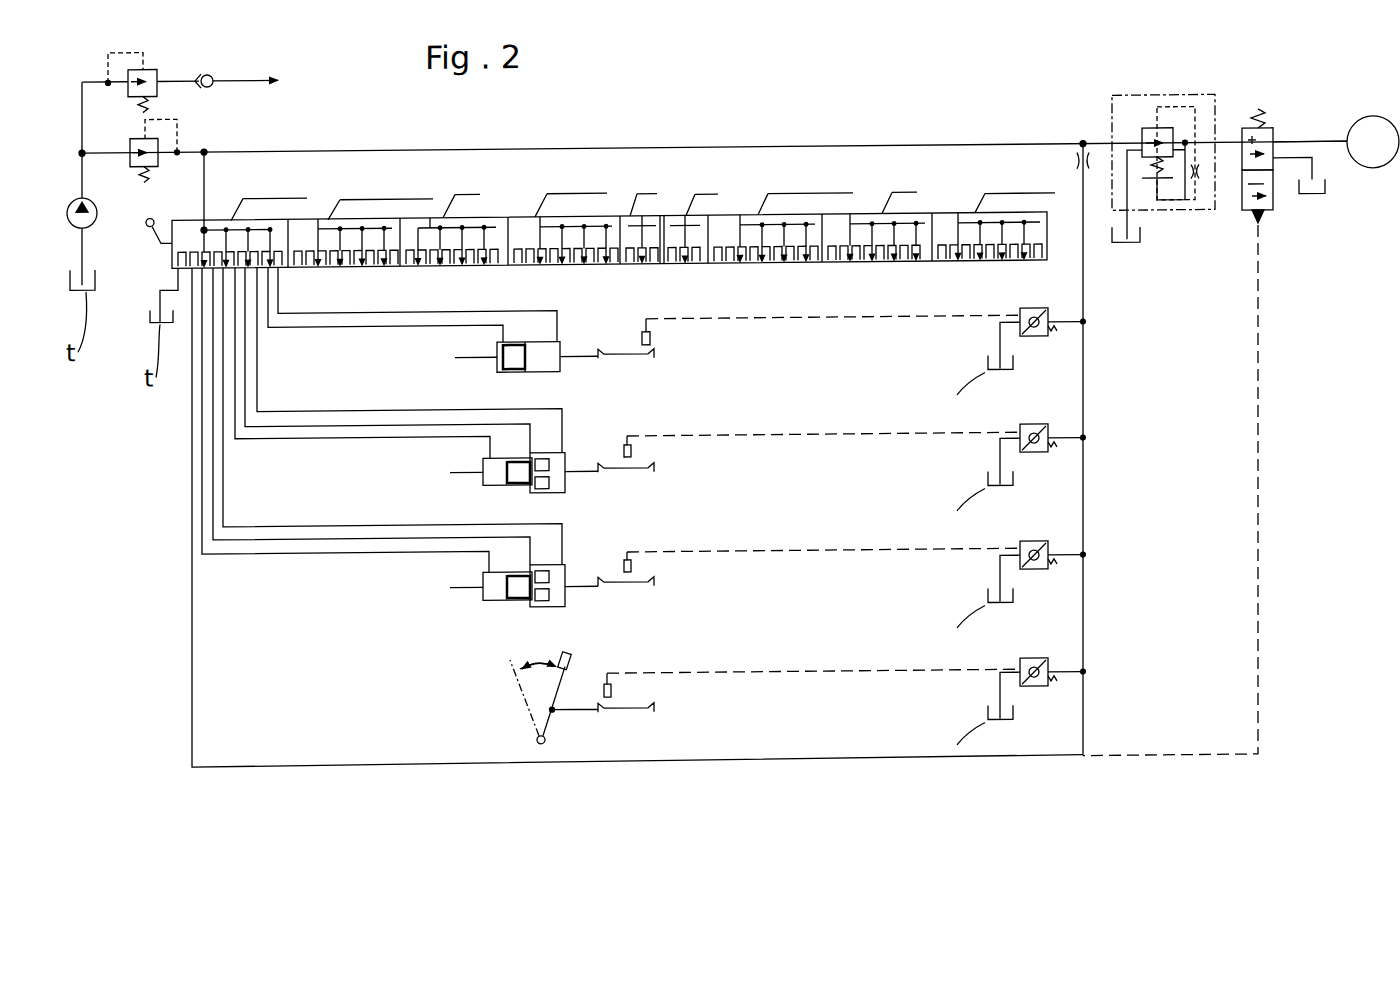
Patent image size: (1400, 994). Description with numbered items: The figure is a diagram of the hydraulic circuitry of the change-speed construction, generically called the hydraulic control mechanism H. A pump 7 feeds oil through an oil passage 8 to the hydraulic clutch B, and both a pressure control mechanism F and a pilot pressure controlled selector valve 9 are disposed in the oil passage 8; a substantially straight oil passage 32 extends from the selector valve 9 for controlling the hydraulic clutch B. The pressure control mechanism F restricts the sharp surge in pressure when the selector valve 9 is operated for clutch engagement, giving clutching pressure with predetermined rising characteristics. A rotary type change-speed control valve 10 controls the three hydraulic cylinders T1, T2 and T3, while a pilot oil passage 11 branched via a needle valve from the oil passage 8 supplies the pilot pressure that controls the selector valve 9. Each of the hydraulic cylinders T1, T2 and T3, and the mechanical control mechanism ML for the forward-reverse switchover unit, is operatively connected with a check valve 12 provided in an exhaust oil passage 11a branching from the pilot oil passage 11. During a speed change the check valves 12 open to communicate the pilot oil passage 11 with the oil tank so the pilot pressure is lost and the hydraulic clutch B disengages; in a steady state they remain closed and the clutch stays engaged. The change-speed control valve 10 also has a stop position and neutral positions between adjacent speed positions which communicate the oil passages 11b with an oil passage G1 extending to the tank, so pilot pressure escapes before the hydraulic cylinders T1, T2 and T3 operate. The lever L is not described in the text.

The pump 7 is at (78, 200).
The oil passage 8 is at (670, 153).
The pilot pressure controlled selector valve 9 is at (1274, 214).
The rotary type change-speed control valve 10 is at (812, 282).
The pilot oil passage 11 is at (1086, 518).
The exhaust oil passage 11a is at (1084, 330).
The oil passages 11b is at (637, 531).
The check valve 12 is at (1036, 346).
The oil passage 32 is at (1333, 154).
The pressure control mechanism F is at (1118, 106).
The hydraulic control mechanism H is at (1122, 776).
The hydraulic clutch B is at (1373, 142).
The lever L is at (572, 672).
The mechanical control mechanism ML is at (502, 719).
The hydraulic cylinder T1 is at (513, 490).
The hydraulic cylinder T2 is at (516, 606).
The hydraulic cylinder T3 is at (514, 378).
The oil passage G1 is at (172, 271).